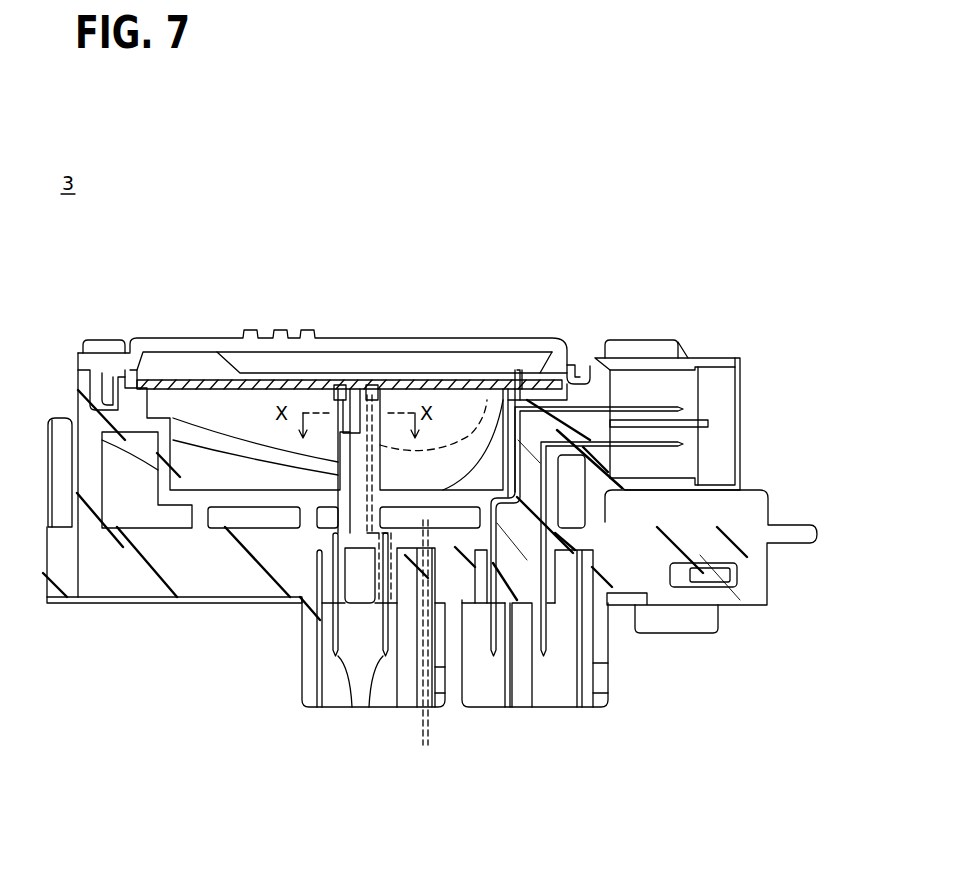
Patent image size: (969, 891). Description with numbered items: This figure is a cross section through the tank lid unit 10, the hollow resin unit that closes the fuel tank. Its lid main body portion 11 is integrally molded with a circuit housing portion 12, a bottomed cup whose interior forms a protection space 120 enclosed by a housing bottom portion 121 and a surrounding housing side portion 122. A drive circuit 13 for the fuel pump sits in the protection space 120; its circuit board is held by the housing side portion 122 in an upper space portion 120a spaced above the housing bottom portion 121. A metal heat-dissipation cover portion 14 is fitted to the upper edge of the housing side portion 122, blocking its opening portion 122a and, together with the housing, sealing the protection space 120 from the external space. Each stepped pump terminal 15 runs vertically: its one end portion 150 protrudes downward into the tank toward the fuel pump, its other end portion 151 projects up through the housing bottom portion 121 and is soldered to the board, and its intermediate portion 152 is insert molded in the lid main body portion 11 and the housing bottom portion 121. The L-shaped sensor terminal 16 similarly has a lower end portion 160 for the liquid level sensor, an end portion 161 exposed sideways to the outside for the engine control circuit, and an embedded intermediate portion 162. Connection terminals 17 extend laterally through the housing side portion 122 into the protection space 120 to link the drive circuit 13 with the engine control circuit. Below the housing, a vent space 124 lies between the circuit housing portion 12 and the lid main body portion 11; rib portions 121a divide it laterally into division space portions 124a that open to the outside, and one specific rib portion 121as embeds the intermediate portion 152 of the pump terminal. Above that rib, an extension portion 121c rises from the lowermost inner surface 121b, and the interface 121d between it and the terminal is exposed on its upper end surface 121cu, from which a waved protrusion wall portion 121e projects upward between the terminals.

The tank lid unit 10 is at (631, 355).
The lid main body portion 11 is at (100, 582).
The circuit housing portion 12 is at (150, 600).
The drive circuit 13 is at (270, 387).
The heat-dissipation cover portion 14 is at (180, 353).
The pump terminal 15 is at (285, 407).
The one end portion 150 is at (338, 657).
The other end portion 151 is at (352, 410).
The intermediate portion 152 is at (83, 295).
The sensor terminal 16 is at (600, 437).
The one end portion 160 is at (545, 657).
The other end portion 161 is at (682, 444).
The intermediate portion 162 is at (622, 582).
The connection terminal 17 is at (523, 352).
The protection space 120 is at (223, 428).
The upper space portion 120a is at (150, 395).
The housing bottom portion 121 is at (450, 600).
The rib portion 121a is at (103, 433).
The specific rib portion 121as is at (41, 341).
The lowermost inner surface 121b is at (497, 397).
The extension portion 121c is at (250, 440).
The upper end surface 121cu is at (383, 430).
The interface 121d is at (252, 385).
The protrusion wall portion 121e is at (341, 412).
The housing side portion 122 is at (533, 478).
The opening portion 122a is at (573, 352).
The vent space 124 is at (343, 802).
The division space portion 124a is at (293, 578).